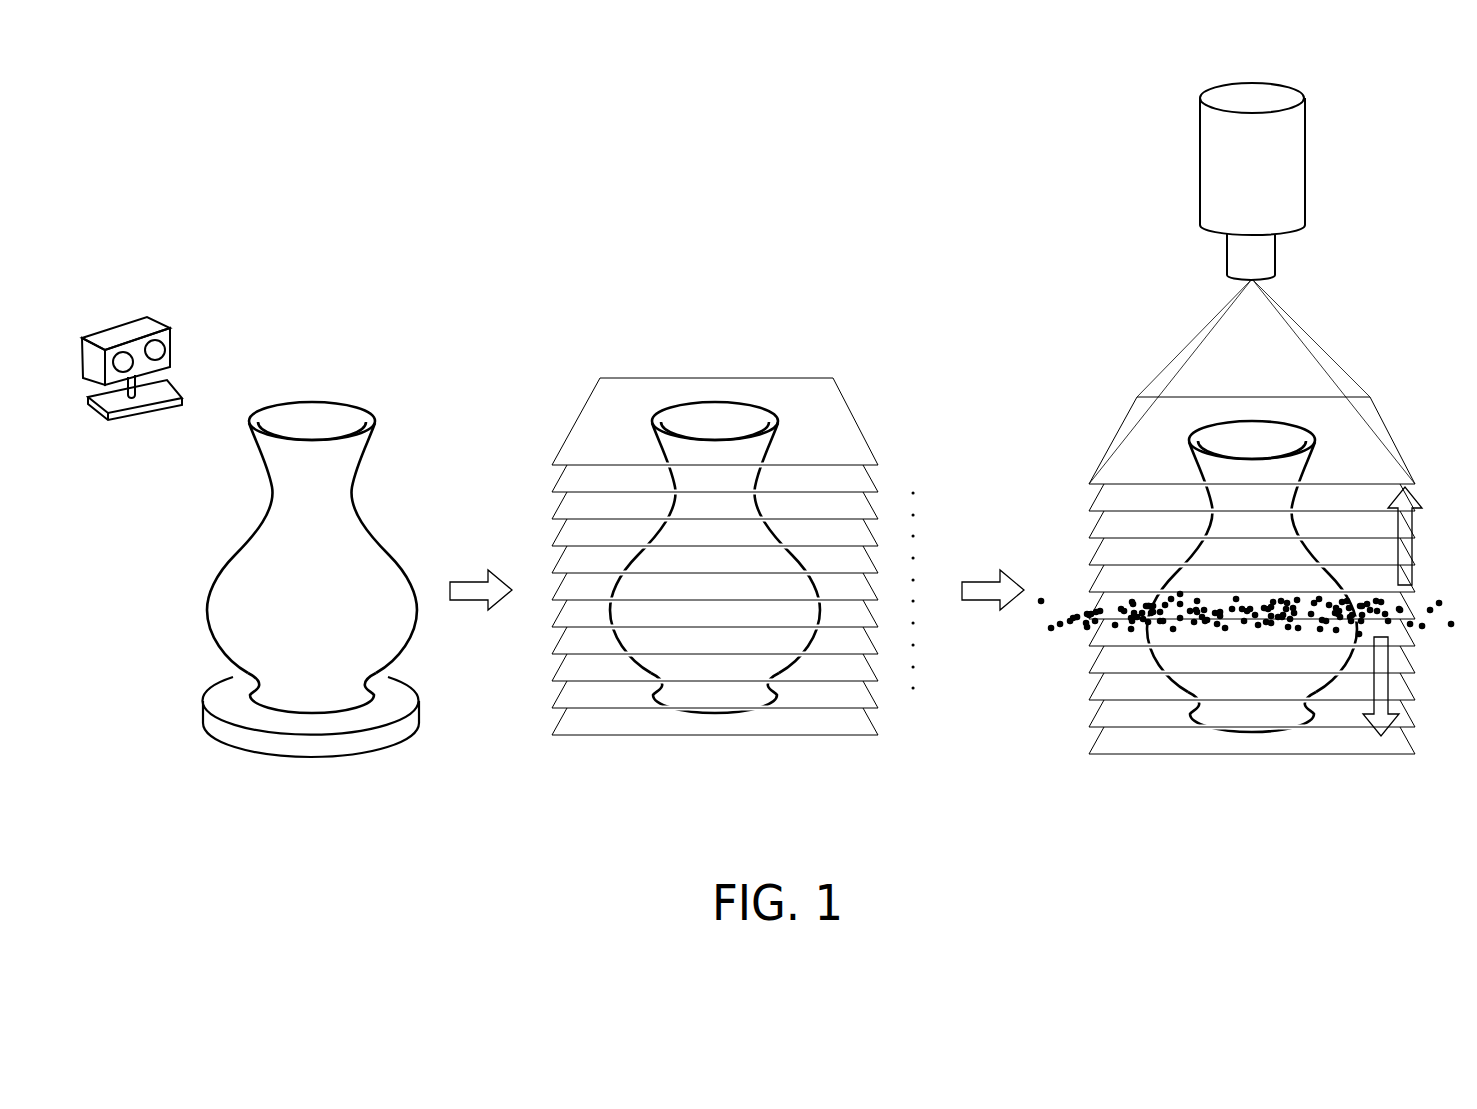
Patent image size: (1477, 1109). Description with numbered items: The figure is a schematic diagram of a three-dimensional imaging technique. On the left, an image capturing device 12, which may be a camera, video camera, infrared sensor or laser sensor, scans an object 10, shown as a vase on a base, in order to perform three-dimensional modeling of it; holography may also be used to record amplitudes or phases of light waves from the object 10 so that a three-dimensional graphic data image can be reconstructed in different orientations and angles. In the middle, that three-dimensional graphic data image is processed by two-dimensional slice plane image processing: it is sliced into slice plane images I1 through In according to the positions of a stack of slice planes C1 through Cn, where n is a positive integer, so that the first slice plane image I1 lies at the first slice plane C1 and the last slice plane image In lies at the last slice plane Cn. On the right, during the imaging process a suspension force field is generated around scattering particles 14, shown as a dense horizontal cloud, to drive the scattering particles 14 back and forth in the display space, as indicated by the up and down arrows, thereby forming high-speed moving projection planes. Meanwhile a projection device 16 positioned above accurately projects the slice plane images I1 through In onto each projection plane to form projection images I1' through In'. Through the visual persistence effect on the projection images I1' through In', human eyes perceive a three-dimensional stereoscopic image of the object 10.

The object 10 is at (313, 410).
The image capturing device 12 is at (142, 319).
The scattering particles 14 is at (1056, 598).
The projection device 16 is at (1297, 167).
The slice plane image I1 is at (715, 496).
The slice plane image In is at (716, 733).
The slice plane C1 is at (876, 464).
The slice plane Cn is at (876, 736).
The projection image I1' is at (1252, 515).
The projection image In' is at (1256, 750).